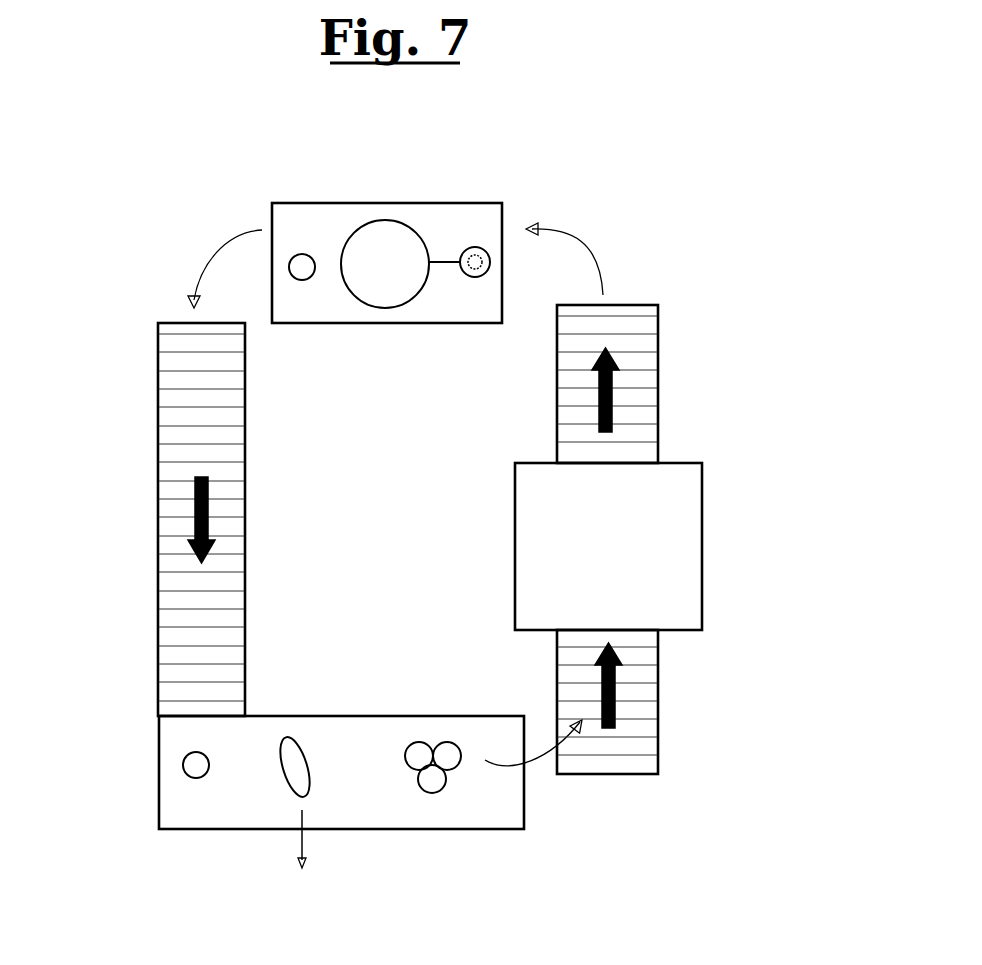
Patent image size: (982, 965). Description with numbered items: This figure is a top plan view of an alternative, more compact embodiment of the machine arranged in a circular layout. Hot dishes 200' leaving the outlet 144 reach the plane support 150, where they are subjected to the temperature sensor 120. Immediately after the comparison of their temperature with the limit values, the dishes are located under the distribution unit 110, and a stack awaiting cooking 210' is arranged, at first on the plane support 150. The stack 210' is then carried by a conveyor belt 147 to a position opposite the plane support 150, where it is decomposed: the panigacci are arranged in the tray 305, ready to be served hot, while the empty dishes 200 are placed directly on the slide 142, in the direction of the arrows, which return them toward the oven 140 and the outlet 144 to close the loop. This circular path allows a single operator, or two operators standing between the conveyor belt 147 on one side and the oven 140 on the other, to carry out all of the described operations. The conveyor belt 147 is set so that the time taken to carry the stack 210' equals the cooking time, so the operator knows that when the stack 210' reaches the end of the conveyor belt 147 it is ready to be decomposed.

The distribution unit 110 is at (390, 237).
The temperature sensor 120 is at (474, 252).
The oven 140 is at (703, 558).
The slide 142 is at (658, 687).
The outlet 144 is at (556, 339).
The conveyor belt 147 is at (165, 443).
The plane support 150 is at (408, 323).
The empty dishes 200 is at (454, 824).
The hot dishes 200' is at (436, 198).
The stack awaiting cooking 210' is at (180, 487).
The tray 305 is at (288, 774).